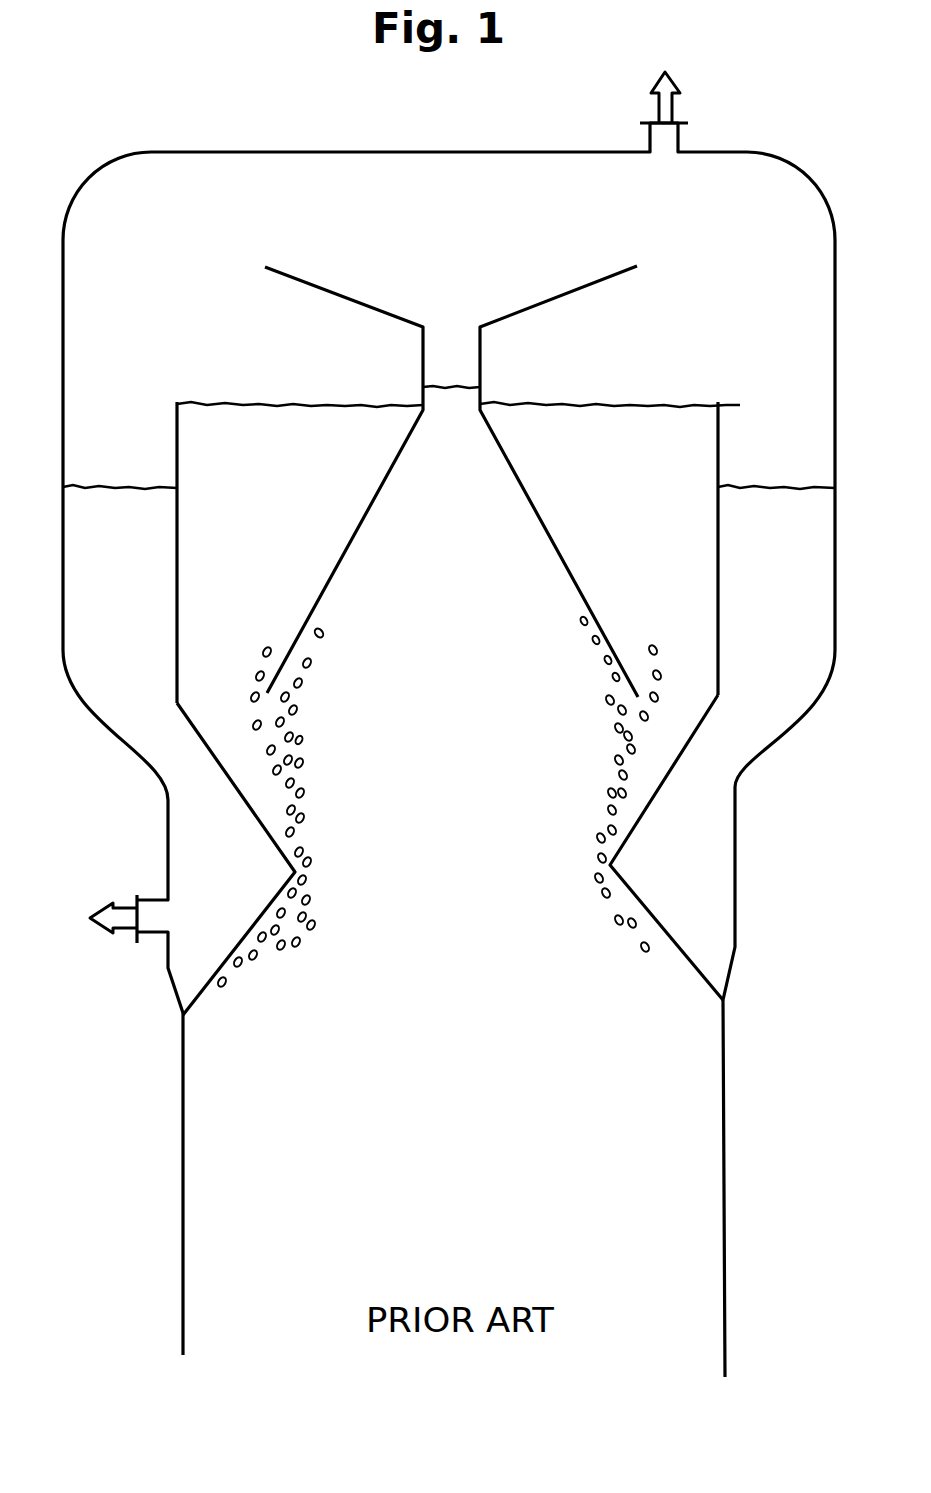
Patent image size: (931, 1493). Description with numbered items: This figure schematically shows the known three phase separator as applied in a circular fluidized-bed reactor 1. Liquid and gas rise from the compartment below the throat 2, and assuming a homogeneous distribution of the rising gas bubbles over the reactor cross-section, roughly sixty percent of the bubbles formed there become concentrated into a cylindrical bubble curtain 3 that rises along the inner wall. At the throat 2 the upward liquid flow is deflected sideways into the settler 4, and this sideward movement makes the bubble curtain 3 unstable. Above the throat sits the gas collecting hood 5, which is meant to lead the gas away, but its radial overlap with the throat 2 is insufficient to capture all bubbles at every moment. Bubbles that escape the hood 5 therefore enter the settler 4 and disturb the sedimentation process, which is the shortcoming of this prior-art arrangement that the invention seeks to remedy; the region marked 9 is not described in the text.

The circular fluidized-bed reactor 1 is at (182, 1202).
The throat 2 is at (277, 893).
The cylindrical bubble curtain 3 is at (293, 780).
The settler 4 is at (458, 544).
The gas collecting hood 5 is at (328, 585).
The separator vessel 9 is at (449, 542).